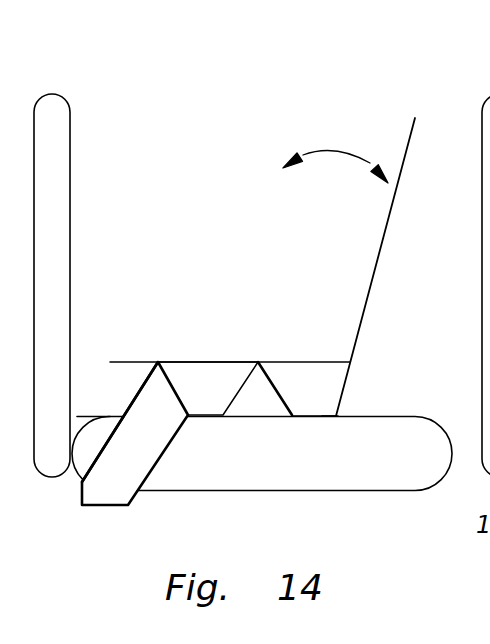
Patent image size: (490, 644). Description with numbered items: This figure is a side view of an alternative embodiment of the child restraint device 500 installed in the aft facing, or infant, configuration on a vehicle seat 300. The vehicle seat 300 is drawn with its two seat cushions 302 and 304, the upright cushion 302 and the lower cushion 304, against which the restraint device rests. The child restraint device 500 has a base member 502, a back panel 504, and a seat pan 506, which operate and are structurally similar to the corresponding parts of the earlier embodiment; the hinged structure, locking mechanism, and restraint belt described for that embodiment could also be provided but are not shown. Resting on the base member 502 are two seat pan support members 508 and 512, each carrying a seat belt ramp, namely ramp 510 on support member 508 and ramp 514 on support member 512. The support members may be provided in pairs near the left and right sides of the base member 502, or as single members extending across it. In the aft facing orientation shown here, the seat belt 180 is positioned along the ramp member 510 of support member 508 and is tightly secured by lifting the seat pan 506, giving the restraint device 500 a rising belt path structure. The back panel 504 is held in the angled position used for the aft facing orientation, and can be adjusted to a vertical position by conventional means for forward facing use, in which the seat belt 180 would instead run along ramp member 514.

The vehicle seat 300 is at (262, 286).
The seat cushion 302 is at (58, 287).
The seat cushion 304 is at (398, 478).
The child restraint device 500 is at (282, 267).
The base member 502 is at (322, 413).
The back panel 504 is at (373, 288).
The seat pan 506 is at (148, 362).
The seat pan support member 508 is at (148, 372).
The seat belt ramp 510 is at (163, 365).
The seat pan support member 512 is at (267, 390).
The seat belt ramp 514 is at (243, 362).
The seat belt 180 is at (109, 435).